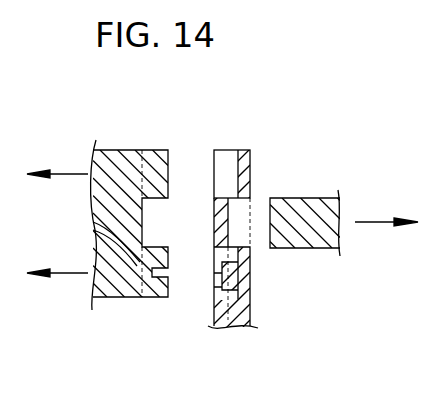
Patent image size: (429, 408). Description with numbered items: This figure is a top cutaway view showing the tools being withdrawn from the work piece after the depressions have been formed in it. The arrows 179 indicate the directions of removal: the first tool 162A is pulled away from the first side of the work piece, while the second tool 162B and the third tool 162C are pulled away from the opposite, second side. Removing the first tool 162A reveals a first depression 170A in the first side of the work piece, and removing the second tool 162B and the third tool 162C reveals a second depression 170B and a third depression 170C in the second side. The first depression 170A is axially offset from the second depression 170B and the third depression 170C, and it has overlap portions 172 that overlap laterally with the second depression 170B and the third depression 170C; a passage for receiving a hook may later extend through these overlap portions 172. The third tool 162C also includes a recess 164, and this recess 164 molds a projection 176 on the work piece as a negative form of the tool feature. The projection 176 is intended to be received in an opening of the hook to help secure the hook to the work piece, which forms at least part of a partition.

The first tool 162A is at (340, 240).
The second tool 162B is at (150, 150).
The third tool 162C is at (150, 299).
The recess 164 is at (93, 225).
The first depression 170A is at (240, 222).
The second depression 170B is at (225, 163).
The third depression 170C is at (207, 297).
The overlap portions 172 is at (233, 198).
The projection 176 is at (222, 275).
The arrows 179 is at (63, 172).